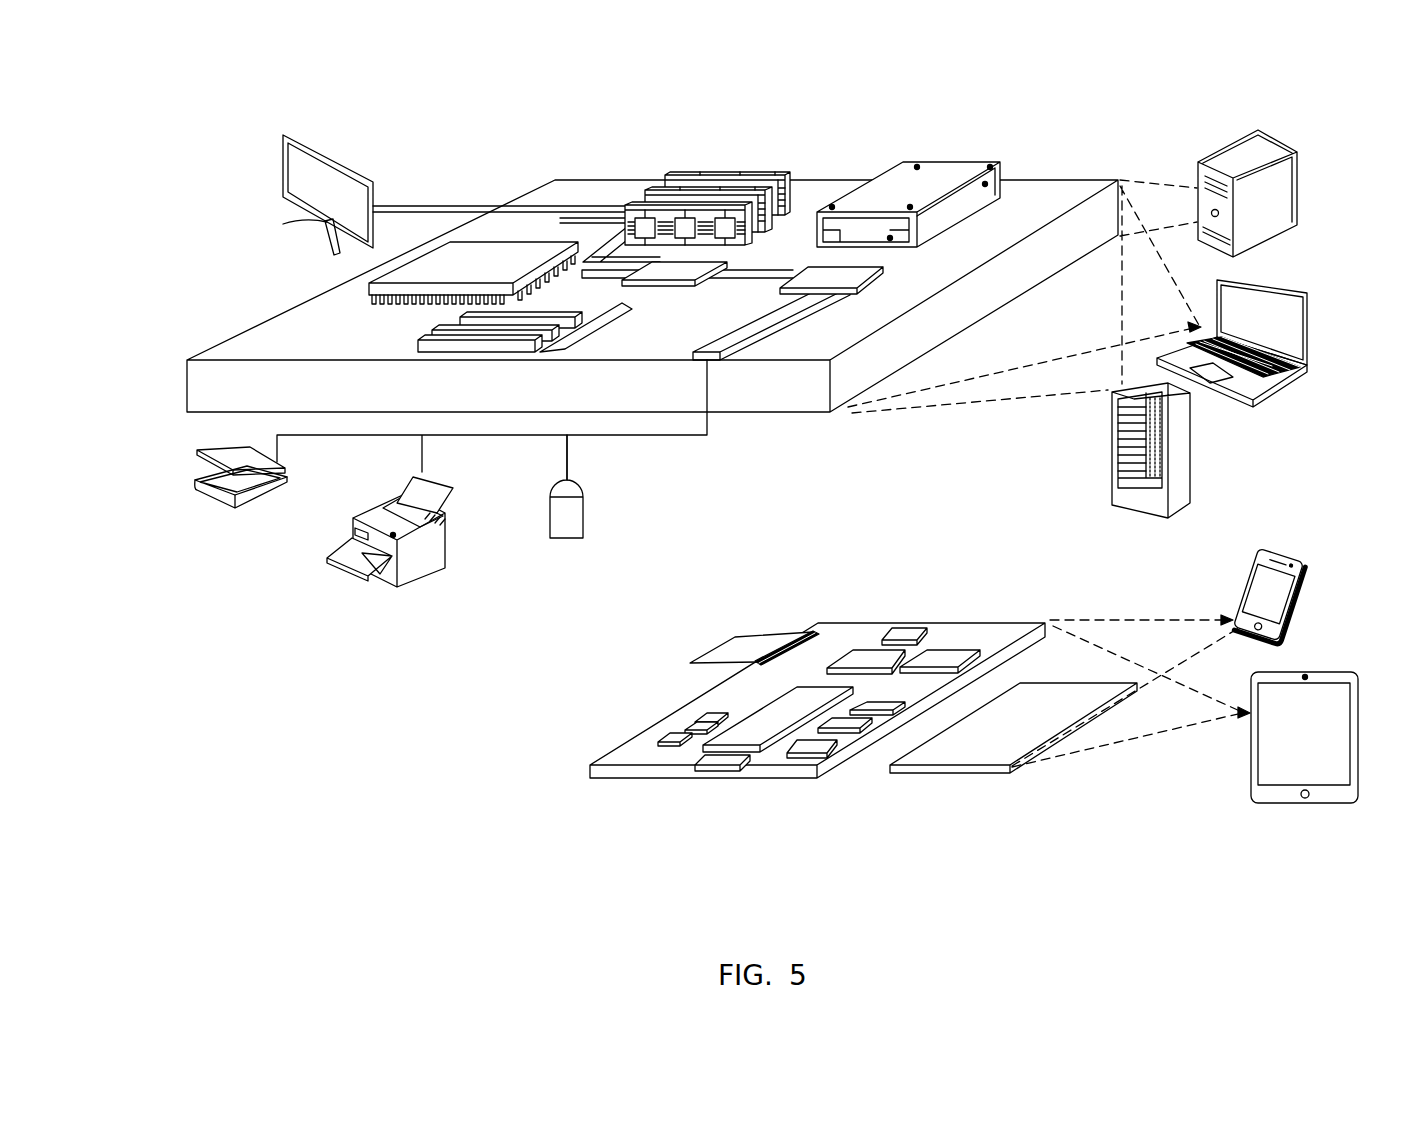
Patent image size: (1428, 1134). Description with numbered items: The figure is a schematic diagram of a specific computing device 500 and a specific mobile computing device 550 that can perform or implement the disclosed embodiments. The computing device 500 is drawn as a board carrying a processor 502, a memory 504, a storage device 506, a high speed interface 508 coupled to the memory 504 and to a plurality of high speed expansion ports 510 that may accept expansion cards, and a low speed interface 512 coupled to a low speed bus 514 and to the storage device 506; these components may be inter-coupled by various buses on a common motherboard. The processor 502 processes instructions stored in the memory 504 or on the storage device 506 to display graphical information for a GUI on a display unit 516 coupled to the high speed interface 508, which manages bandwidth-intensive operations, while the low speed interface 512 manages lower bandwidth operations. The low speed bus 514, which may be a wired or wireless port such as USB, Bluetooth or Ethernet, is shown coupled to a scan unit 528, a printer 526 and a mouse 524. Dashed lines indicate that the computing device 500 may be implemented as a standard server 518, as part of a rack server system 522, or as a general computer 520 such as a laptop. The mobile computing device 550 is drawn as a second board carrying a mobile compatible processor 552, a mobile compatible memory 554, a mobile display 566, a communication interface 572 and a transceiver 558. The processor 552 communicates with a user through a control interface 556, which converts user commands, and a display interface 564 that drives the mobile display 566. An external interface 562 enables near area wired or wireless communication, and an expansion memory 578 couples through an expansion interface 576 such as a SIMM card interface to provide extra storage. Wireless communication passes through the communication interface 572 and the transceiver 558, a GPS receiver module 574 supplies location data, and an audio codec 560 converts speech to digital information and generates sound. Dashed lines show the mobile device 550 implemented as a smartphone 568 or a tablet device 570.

The specific computing device 500 is at (504, 181).
The processor 502 is at (369, 290).
The memory 504 is at (700, 172).
The storage device 506 is at (906, 162).
The high speed interface 508 is at (650, 273).
The high speed expansion ports 510 is at (433, 327).
The low speed interface 512 is at (853, 287).
The low speed bus 514 is at (723, 362).
The display unit 516 is at (285, 132).
The standard server 518 is at (1297, 150).
The general computer 520 is at (1307, 310).
The rack server system 522 is at (1112, 470).
The mouse 524 is at (566, 540).
The printer 526 is at (393, 592).
The scan unit 528 is at (195, 482).
The specific mobile computing device 550 is at (591, 765).
The mobile compatible processor 552 is at (757, 750).
The mobile compatible memory 554 is at (690, 728).
The control interface 556 is at (857, 733).
The transceiver 558 is at (982, 651).
The audio codec 560 is at (874, 716).
The external interface 562 is at (718, 768).
The display interface 564 is at (820, 758).
The mobile display 566 is at (1013, 768).
The smartphone 568 is at (1260, 557).
The tablet device 570 is at (1302, 808).
The communication interface 572 is at (865, 657).
The receiver module 574 is at (900, 623).
The expansion interface 576 is at (800, 633).
The expansion memory 578 is at (710, 652).